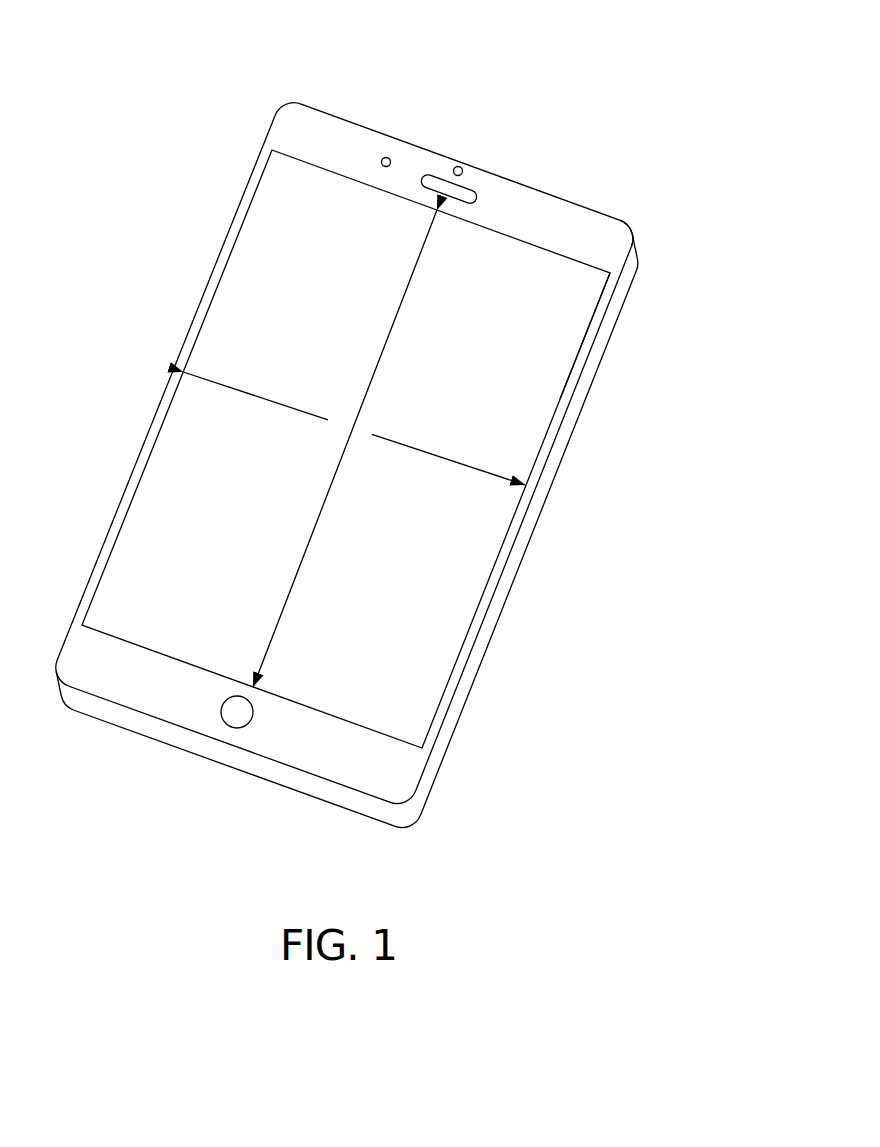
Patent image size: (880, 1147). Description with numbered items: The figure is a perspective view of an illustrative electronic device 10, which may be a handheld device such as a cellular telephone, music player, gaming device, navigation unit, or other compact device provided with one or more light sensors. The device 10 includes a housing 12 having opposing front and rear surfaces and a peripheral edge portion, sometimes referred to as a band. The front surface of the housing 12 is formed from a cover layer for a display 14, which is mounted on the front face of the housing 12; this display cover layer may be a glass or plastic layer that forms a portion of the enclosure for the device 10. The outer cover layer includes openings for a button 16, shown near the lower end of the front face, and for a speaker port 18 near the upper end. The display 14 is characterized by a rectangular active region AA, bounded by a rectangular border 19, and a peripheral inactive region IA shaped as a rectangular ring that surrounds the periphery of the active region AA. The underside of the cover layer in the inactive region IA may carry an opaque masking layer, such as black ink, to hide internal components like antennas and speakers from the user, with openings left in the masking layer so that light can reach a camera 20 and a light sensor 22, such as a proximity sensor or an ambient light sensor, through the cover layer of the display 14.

The electronic device 10 is at (145, 57).
The housing 12 is at (527, 527).
The display 14 is at (522, 433).
The button 16 is at (242, 727).
The speaker port 18 is at (471, 193).
The rectangular border 19 is at (585, 262).
The camera 20 is at (387, 157).
The light sensor 22 is at (459, 166).
The active region AA is at (354, 448).
The inactive region IA is at (597, 323).